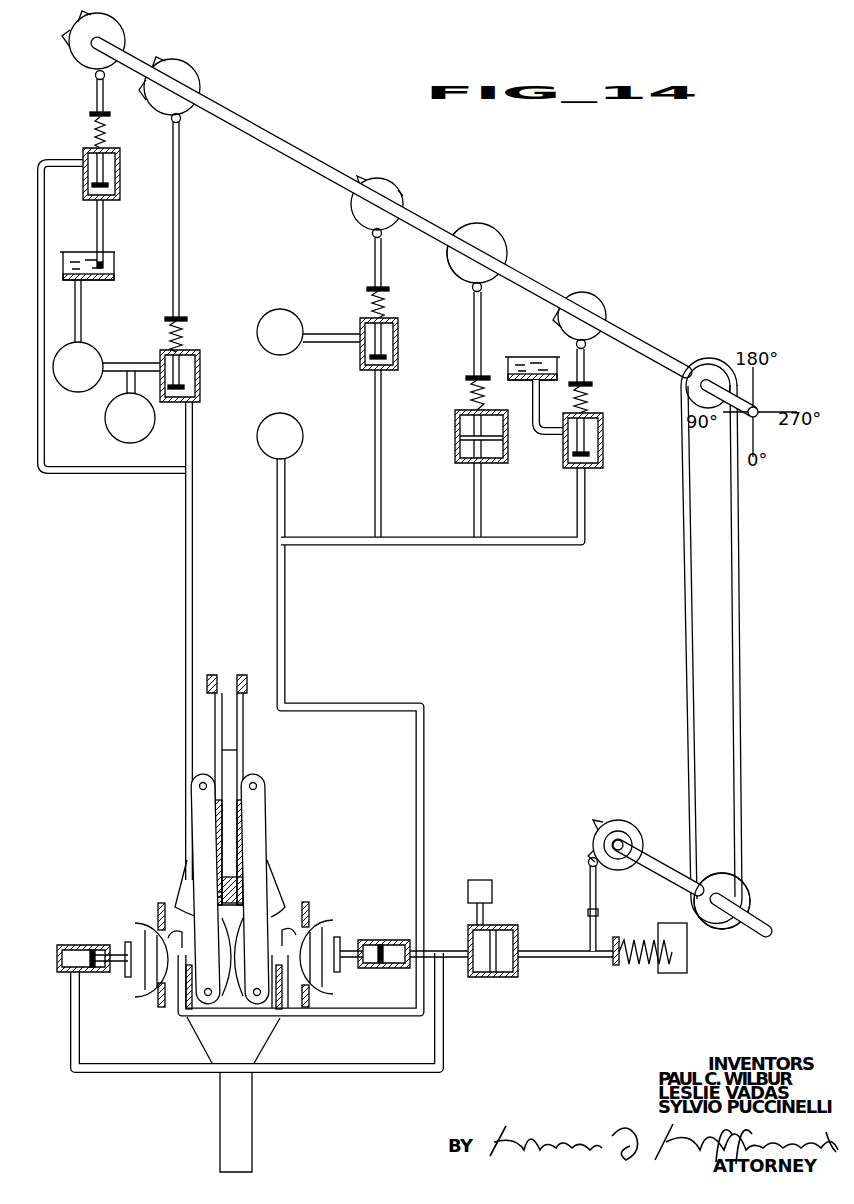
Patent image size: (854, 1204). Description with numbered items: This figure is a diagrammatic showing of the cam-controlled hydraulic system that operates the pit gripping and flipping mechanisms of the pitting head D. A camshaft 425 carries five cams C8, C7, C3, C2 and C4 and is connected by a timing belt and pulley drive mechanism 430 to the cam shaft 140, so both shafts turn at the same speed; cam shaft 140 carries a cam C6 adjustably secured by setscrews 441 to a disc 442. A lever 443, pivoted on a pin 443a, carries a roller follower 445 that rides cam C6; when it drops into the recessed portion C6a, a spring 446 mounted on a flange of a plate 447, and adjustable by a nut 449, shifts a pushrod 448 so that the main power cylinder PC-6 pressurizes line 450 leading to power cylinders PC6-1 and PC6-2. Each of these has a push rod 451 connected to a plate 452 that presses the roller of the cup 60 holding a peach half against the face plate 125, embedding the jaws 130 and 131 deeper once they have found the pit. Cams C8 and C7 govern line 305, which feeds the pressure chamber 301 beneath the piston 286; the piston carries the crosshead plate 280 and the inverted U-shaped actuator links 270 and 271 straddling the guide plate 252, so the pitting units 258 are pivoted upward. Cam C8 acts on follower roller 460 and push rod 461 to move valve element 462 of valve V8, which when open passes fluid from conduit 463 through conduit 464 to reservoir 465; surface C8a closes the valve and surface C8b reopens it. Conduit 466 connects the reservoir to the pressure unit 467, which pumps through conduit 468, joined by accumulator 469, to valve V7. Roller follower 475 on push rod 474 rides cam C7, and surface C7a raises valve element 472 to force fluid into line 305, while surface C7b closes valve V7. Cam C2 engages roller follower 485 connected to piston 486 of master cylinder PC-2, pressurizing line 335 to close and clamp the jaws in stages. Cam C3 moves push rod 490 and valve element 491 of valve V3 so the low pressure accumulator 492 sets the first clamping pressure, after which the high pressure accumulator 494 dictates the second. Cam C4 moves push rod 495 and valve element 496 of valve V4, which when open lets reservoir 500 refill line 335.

The cam C8 is at (115, 30).
The camming surface C8a is at (74, 40).
The camming surface C8b is at (102, 15).
The cam C7 is at (190, 82).
The camming surface portion C7a is at (170, 66).
The camming surface C7b is at (162, 62).
The cam C3 is at (398, 196).
The cam C2 is at (492, 234).
The cam C4 is at (600, 302).
The cam C6 is at (610, 822).
The recessed portion C6a is at (592, 845).
The camshaft 425 is at (302, 150).
The timing belt and pulley drive mechanism 430 is at (684, 623).
The cam shaft 140 is at (752, 913).
The follower roller 460 is at (95, 75).
The push rod 461 is at (97, 96).
The valve V8 is at (83, 155).
The valve element 462 is at (108, 184).
The conduit 463 is at (45, 222).
The conduit 464 is at (103, 222).
The reservoir 465 is at (115, 266).
The conduit 466 is at (81, 300).
The pressure unit 467 is at (88, 352).
The conduit 468 is at (145, 370).
The accumulator 469 is at (114, 430).
The push rod 474 is at (180, 222).
The roller follower 475 is at (178, 120).
The valve V7 is at (198, 352).
The valve element 472 is at (185, 385).
The supply line 305 is at (185, 662).
The push rod 490 is at (375, 275).
The low pressure accumulator 492 is at (292, 318).
The valve element 491 is at (362, 347).
The valve V3 is at (398, 332).
The high pressure accumulator 494 is at (303, 438).
The roller follower 485 is at (468, 287).
The master power cylinder PC-2 is at (458, 418).
The piston 486 is at (460, 436).
The reservoir 500 is at (532, 355).
The push rod 495 is at (585, 368).
The valve V4 is at (603, 424).
The valve element 496 is at (590, 455).
The line 335 is at (286, 622).
The piston 286 is at (244, 757).
The crosshead plate 280 is at (237, 776).
The pressure chamber 301 is at (240, 855).
The pitting head D is at (290, 813).
The actuator link 270 is at (196, 840).
The actuator link 271 is at (267, 838).
The guide plate 252 is at (207, 1045).
The pitting unit 258 is at (272, 1017).
The line 450 is at (360, 1070).
The power cylinder PC6-2 is at (110, 945).
The power cylinder PC6-1 is at (381, 974).
The push rod 451 is at (96, 972).
The plate 452 is at (141, 917).
The cup 60 is at (145, 975).
The face plate 125 is at (160, 905).
The pit gripping and clamping jaw 131 is at (160, 985).
The pit gripping and clamping jaw 130 is at (175, 935).
The main power cylinder PC-6 is at (513, 978).
The pushrod 448 is at (540, 958).
The lever 443 is at (590, 882).
The pin 443a is at (589, 912).
The roller follower 445 is at (588, 862).
The disc 442 is at (626, 836).
The setscrews 441 is at (612, 858).
The spring 446 is at (635, 965).
The plate 447 is at (688, 970).
The nut 449 is at (674, 947).